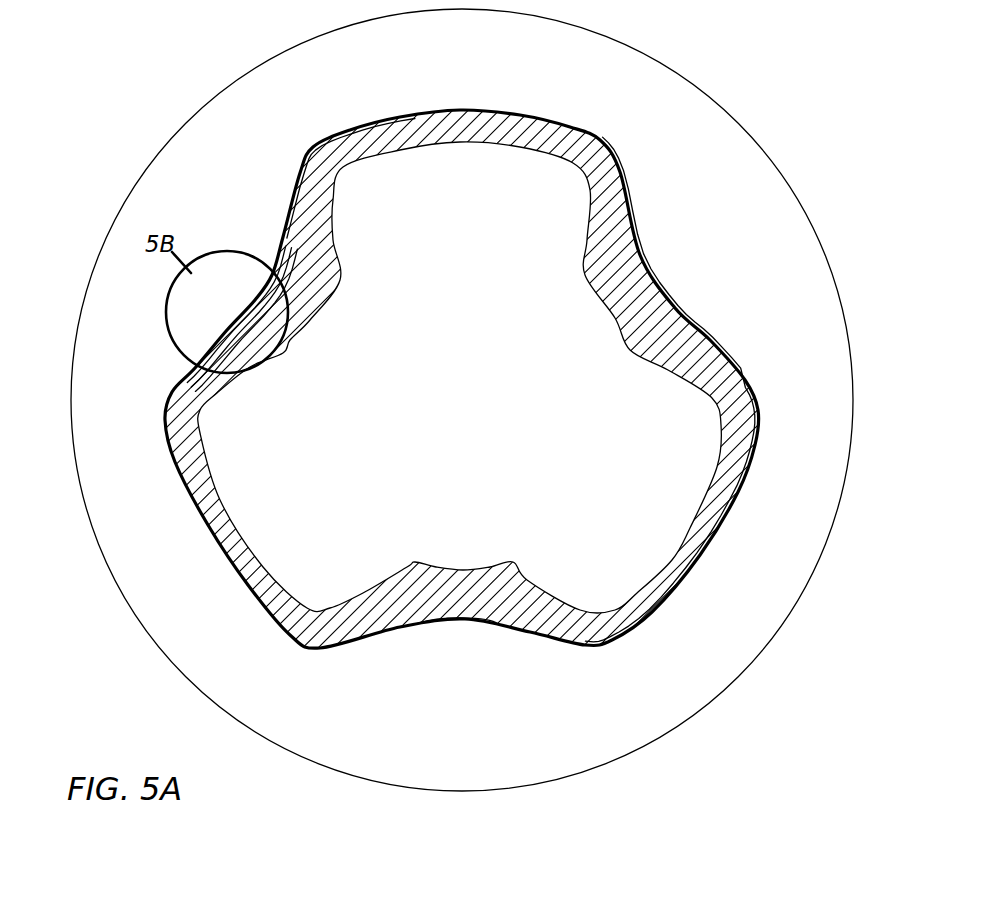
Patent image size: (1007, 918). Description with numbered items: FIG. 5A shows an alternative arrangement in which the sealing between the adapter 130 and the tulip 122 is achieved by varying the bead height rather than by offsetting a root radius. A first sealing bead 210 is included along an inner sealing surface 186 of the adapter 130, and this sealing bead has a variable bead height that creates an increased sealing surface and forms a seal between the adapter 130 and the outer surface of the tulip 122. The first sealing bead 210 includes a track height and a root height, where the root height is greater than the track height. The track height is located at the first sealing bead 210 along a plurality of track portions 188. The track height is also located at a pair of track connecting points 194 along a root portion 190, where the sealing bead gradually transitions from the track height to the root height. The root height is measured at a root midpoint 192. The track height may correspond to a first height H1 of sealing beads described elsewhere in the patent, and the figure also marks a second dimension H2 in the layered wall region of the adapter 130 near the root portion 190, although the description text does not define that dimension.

The tulip 122 is at (603, 142).
The adapter 130 is at (853, 404).
The inner sealing surface 186 is at (611, 174).
The track portions 188 is at (315, 150).
The root portion 190 is at (281, 242).
The root midpoint 192 is at (267, 282).
The track connecting points 194 is at (297, 181).
The first sealing bead 210 is at (758, 401).
The first height H1 is at (330, 165).
The second layer thickness H2 is at (283, 303).